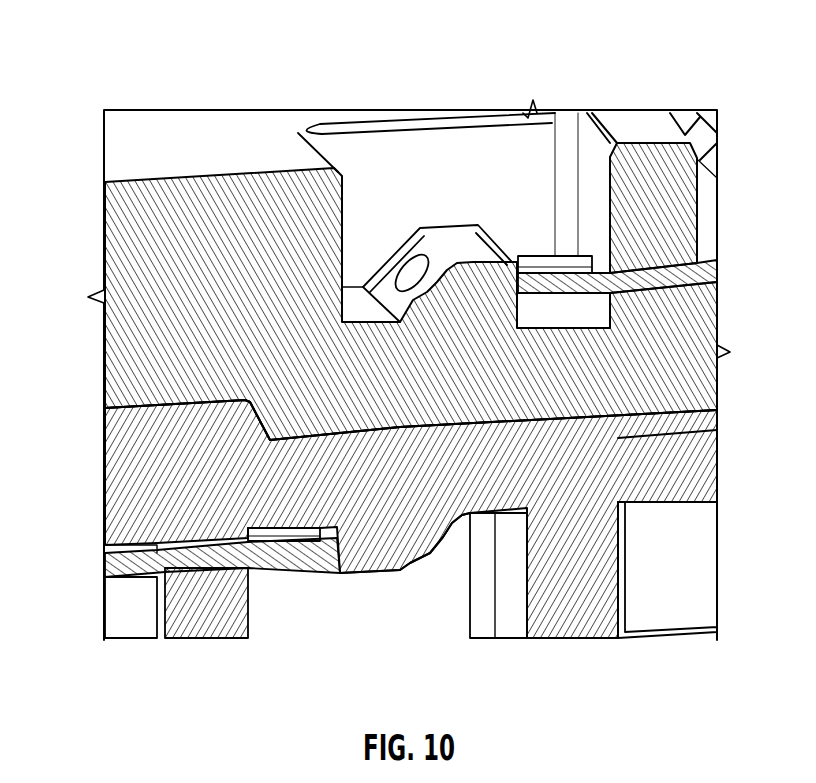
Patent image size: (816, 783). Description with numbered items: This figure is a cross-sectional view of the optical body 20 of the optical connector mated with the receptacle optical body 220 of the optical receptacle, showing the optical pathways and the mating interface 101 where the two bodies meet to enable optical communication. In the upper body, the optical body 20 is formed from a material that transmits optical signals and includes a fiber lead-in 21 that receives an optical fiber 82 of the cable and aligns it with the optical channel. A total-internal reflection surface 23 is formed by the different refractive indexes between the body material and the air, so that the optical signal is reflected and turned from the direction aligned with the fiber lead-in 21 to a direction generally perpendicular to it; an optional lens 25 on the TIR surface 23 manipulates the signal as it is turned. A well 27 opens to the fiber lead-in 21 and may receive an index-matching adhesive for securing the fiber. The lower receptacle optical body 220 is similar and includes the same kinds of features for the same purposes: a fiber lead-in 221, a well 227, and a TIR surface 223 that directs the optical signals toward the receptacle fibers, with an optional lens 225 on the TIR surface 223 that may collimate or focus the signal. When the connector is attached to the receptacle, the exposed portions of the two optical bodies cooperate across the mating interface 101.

The optical body 20 is at (182, 218).
The fiber lead-in 21 is at (683, 272).
The total-internal reflection (TIR) surface 23 is at (430, 250).
The lens 25 is at (410, 273).
The well 27 is at (533, 247).
The optical fiber 82 is at (583, 265).
The mating interface 101 is at (437, 427).
The receptacle optical body 220 is at (135, 480).
The fiber lead-in 221 is at (160, 577).
The TIR surface 223 is at (443, 532).
The lens 225 is at (430, 557).
The well 227 is at (303, 547).